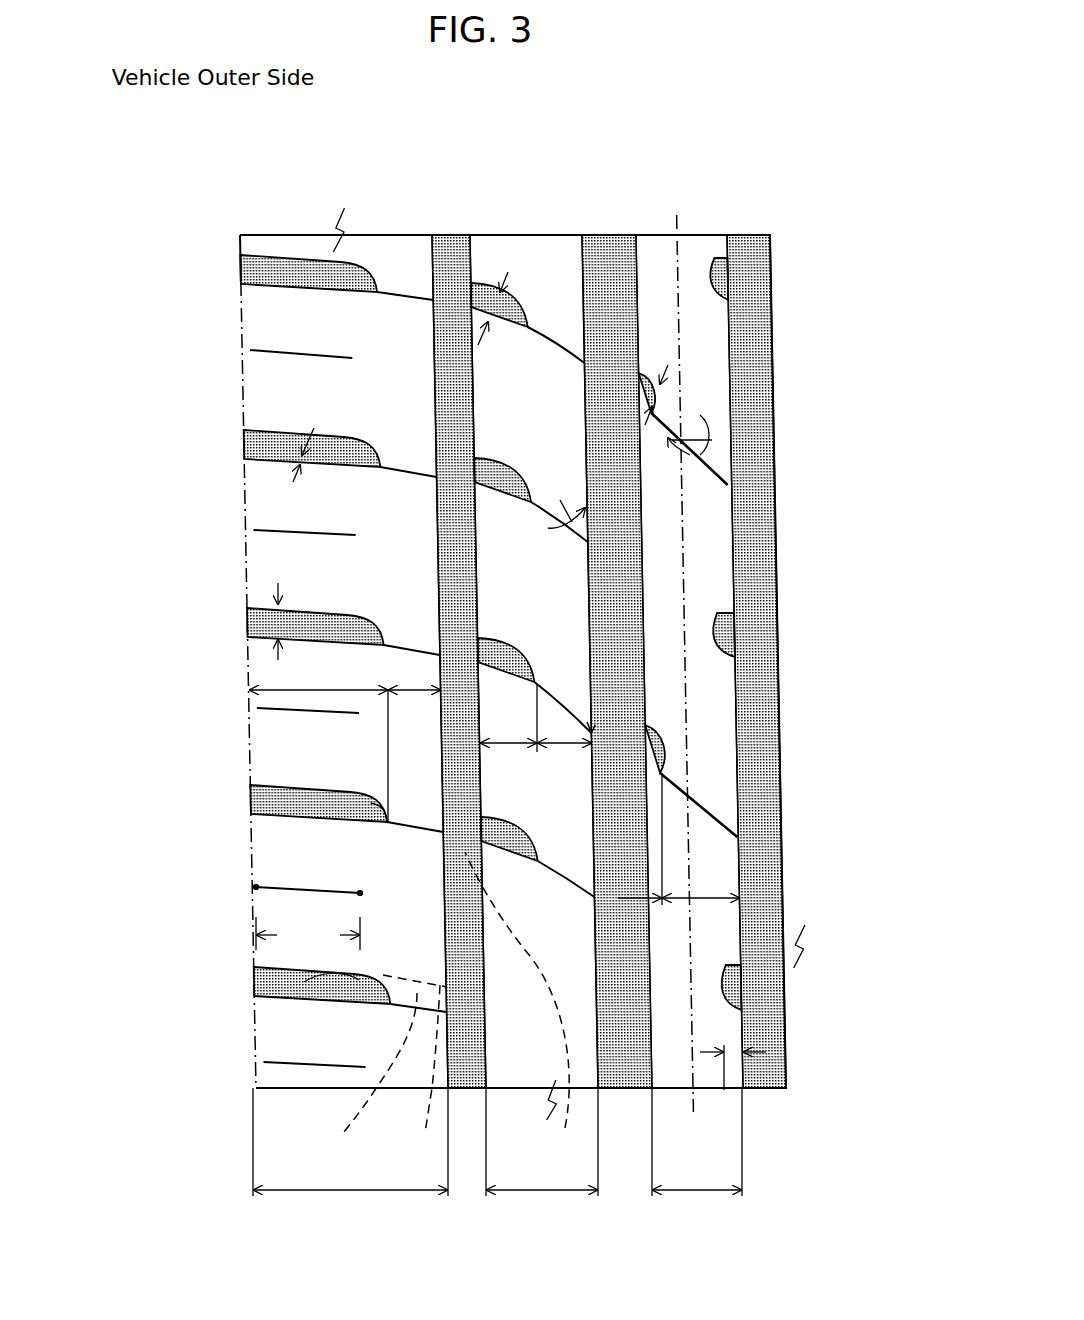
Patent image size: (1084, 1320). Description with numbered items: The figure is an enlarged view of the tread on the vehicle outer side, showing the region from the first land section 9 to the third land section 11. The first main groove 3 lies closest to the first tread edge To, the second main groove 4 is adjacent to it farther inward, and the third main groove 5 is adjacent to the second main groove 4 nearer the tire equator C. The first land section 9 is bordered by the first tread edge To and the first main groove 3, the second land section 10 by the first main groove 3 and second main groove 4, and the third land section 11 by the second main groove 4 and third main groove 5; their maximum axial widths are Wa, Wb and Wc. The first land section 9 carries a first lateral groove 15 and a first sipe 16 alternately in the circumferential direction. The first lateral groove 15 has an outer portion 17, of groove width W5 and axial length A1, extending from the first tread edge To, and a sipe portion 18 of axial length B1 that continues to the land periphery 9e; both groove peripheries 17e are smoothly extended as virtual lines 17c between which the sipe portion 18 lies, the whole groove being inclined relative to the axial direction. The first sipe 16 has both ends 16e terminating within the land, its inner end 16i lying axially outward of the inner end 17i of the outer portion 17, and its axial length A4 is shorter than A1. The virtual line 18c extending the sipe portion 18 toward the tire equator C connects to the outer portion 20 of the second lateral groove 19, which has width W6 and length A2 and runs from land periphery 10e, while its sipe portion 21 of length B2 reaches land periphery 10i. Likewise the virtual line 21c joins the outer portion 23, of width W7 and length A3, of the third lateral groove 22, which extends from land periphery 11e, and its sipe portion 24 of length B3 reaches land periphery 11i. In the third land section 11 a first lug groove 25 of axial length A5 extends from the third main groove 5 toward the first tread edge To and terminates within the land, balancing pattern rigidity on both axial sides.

The first main groove 3 is at (452, 256).
The second main groove 4 is at (600, 258).
The third main groove 5 is at (755, 256).
The first land section 9 is at (372, 256).
The land periphery of first land section 9e is at (430, 265).
The second land section 10 is at (533, 256).
The land periphery of second land section 10e is at (474, 265).
The land periphery of second land section 10i is at (583, 272).
The third land section 11 is at (652, 256).
The land periphery of third land section 11e is at (630, 272).
The land periphery of third land section 11i is at (728, 268).
The tire equator C is at (677, 215).
The first tread edge To is at (240, 305).
The first lateral groove 15 is at (162, 718).
The first sipe 16 is at (290, 887).
The ends of first sipe 16e is at (256, 887).
The inner end of first sipe 16i is at (360, 893).
The outer portion 17 is at (340, 790).
The groove peripheries of outer portion 17e is at (252, 985).
The inner end of outer portion 17i is at (385, 825).
The virtual lines 17c is at (385, 1068).
The sipe portion 18 is at (408, 824).
The virtual line 18c is at (527, 1006).
The second lateral groove 19 is at (848, 555).
The outer portion 20 is at (478, 640).
The sipe portion 21 is at (565, 702).
The virtual line 21c is at (655, 718).
The third lateral groove 22 is at (855, 718).
The outer portion 23 is at (662, 750).
The sipe portion 24 is at (705, 808).
The first lug groove 25 is at (722, 280).
The groove width of outer portion of first lateral groove W5 is at (282, 626).
The groove width of outer portion of second lateral groove W6 is at (432, 300).
The groove width of outer portion of third lateral groove W7 is at (655, 395).
The tire axial length of outer portion of first lateral groove A1 is at (319, 742).
The tire axial length of sipe portion of first lateral groove B1 is at (414, 676).
The tire axial length of outer portion of second lateral groove A2 is at (509, 718).
The tire axial length of sipe portion of second lateral groove B2 is at (564, 727).
The tire axial length of outer portion of third lateral groove A3 is at (650, 897).
The tire axial length of sipe portion of third lateral groove B3 is at (700, 897).
The tire axial length of first sipe A4 is at (308, 933).
The tire axial length of first lug groove A5 is at (738, 1060).
The maximum tire axial width of first land section Wa is at (350, 1157).
The maximum tire axial width of second land section Wb is at (542, 1157).
The maximum tire axial width of third land section Wc is at (697, 1157).